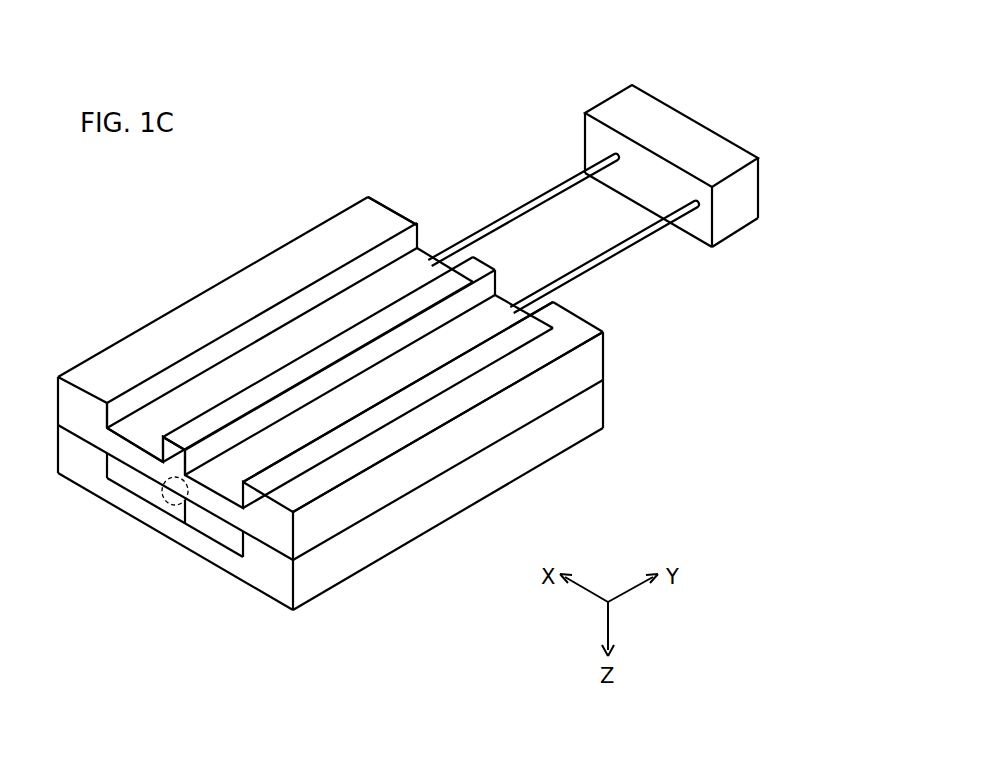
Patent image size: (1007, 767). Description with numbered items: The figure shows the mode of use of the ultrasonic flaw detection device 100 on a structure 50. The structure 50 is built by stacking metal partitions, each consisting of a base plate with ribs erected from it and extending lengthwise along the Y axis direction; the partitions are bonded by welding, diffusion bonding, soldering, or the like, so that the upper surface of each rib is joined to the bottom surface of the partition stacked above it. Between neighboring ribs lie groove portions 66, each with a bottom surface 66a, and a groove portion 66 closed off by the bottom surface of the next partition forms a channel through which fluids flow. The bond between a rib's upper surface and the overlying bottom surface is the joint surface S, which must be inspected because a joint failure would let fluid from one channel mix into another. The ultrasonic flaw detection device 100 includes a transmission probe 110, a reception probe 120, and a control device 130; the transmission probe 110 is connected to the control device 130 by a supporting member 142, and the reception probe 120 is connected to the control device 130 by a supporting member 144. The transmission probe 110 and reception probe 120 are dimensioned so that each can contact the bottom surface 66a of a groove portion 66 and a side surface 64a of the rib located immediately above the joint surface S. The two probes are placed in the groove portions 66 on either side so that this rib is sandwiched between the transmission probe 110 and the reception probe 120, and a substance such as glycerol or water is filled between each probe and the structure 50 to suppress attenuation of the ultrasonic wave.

The ultrasonic flaw detection device 100 is at (692, 86).
The structure 50 is at (92, 312).
The groove portion 66 is at (150, 413).
The bottom surface of groove portion 66a is at (142, 430).
The side surface of rib 64a is at (206, 453).
The joint surface S is at (175, 505).
The transmission probe 110 is at (383, 355).
The reception probe 120 is at (307, 318).
The control device 130 is at (740, 228).
The supporting member 142 is at (597, 268).
The supporting member 144 is at (476, 230).